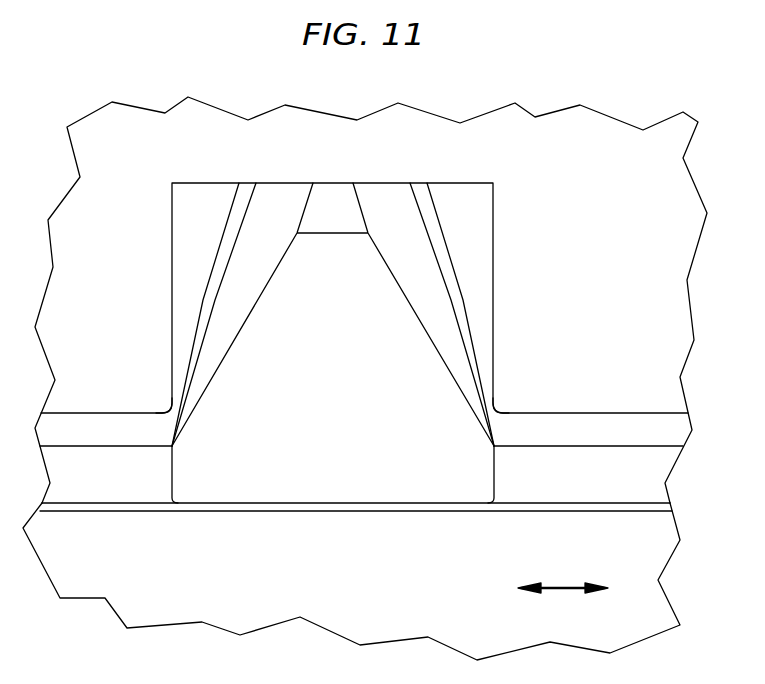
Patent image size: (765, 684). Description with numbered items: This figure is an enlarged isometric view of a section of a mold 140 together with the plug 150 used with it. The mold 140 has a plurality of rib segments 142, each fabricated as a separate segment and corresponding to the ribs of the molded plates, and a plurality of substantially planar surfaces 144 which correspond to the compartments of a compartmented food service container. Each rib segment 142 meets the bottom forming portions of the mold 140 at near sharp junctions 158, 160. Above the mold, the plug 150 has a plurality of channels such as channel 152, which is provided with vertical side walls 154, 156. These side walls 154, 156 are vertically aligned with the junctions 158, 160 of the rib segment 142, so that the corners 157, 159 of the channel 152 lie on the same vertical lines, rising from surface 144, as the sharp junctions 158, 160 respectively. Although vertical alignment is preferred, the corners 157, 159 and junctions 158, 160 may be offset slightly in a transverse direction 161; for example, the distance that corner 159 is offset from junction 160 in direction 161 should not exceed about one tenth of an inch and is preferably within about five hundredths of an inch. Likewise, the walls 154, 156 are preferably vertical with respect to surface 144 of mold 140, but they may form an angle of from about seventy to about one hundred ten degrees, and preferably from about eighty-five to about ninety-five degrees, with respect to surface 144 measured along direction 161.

The mold 140 is at (447, 604).
The rib segment 142 is at (346, 390).
The substantially planar surface 144 is at (58, 437).
The plug 150 is at (626, 219).
The channel 152 is at (188, 265).
The vertical side wall 154 is at (172, 318).
The vertical side wall 156 is at (478, 265).
The corner 157 is at (167, 410).
The near sharp junction 158 is at (167, 448).
The corner 159 is at (500, 407).
The near sharp junction 160 is at (498, 448).
The transverse direction 161 is at (562, 591).